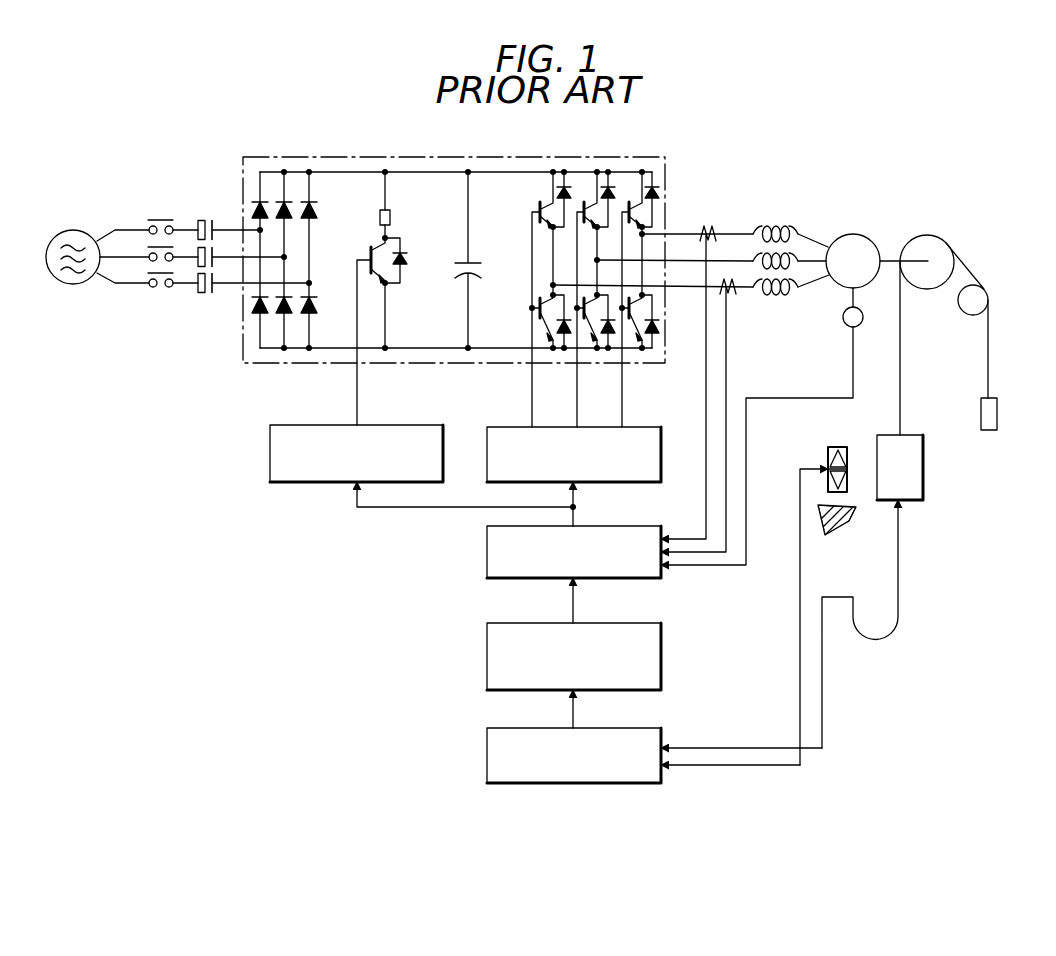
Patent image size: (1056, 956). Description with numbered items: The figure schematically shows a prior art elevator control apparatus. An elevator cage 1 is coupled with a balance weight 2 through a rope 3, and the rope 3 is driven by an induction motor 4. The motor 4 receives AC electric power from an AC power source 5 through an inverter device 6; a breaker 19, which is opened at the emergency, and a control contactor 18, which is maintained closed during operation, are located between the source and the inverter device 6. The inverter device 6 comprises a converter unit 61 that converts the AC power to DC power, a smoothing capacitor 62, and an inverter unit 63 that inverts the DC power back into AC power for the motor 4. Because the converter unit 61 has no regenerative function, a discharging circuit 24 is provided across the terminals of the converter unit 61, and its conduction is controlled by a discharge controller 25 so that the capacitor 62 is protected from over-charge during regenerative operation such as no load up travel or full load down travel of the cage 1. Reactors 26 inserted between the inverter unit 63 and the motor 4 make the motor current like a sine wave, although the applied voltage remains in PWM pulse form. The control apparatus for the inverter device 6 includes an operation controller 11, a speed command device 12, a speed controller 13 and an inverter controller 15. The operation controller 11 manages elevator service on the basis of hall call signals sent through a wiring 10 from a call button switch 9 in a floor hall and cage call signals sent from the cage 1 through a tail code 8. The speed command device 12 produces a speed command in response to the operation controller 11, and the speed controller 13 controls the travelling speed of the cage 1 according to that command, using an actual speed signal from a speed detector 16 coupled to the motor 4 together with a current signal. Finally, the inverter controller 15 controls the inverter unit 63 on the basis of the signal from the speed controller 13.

The elevator cage 1 is at (912, 433).
The balance weight 2 is at (988, 432).
The rope 3 is at (899, 342).
The induction motor 4 is at (861, 236).
The AC power source 5 is at (79, 230).
The inverter device 6 is at (432, 157).
The tail code 8 is at (898, 580).
The call button switch 9 is at (838, 447).
The wiring 10 is at (800, 578).
The operation controller 11 is at (663, 736).
The speed command device 12 is at (663, 631).
The speed controller 13 is at (663, 531).
The inverter controller 15 is at (663, 441).
The speed detector 16 is at (847, 327).
The control contactor 18 is at (205, 213).
The breaker 19 is at (158, 212).
The discharging circuit 24 is at (369, 297).
The discharge controller 25 is at (445, 432).
The reactors 26 is at (780, 226).
The converter unit 61 is at (296, 260).
The smoothing capacitor 62 is at (474, 260).
The inverter unit 63 is at (581, 298).